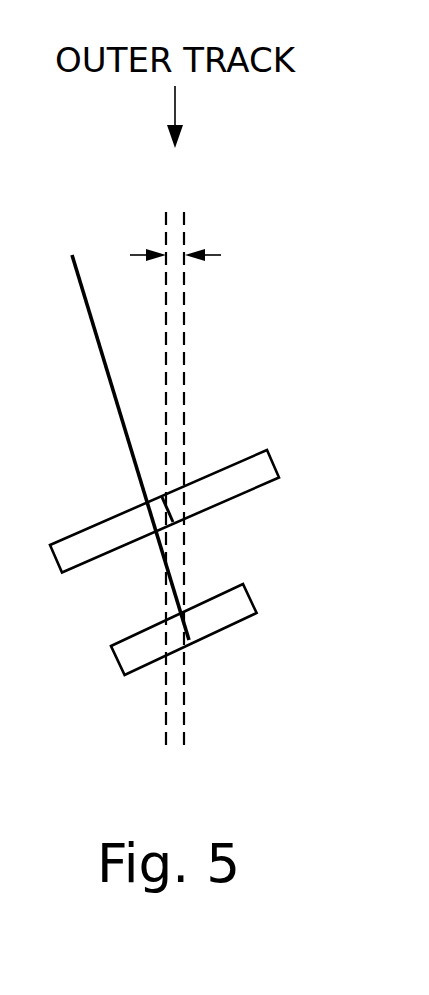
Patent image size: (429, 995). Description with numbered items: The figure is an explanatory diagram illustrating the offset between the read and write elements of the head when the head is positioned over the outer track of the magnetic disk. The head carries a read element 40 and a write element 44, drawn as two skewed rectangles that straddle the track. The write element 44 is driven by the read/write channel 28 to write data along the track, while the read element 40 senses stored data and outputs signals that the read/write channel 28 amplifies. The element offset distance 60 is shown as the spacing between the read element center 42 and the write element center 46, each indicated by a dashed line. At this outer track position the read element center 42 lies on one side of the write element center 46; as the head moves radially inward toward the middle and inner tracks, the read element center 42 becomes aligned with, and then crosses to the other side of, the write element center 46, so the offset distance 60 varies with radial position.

The read/write channel 28 is at (92, 328).
The write element center 46 is at (165, 240).
The read element center 42 is at (185, 240).
The element offset distance 60 is at (212, 255).
The write element 44 is at (278, 463).
The read element 40 is at (253, 601).